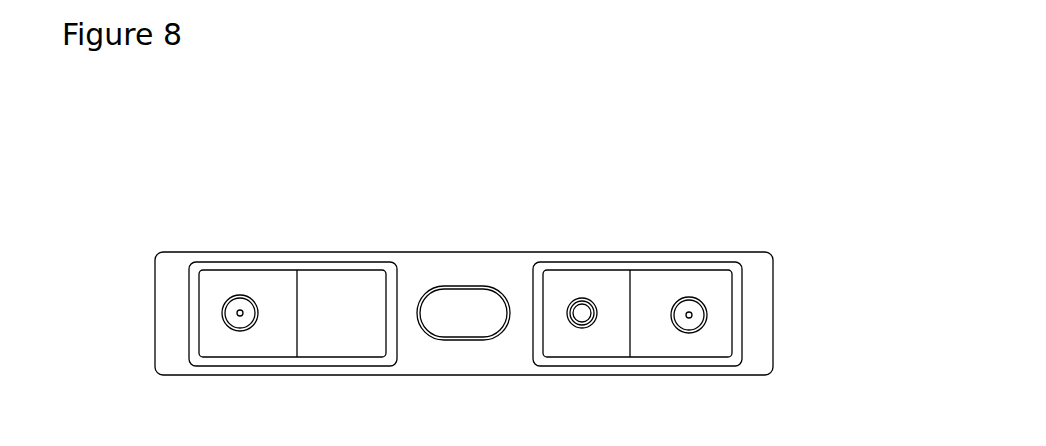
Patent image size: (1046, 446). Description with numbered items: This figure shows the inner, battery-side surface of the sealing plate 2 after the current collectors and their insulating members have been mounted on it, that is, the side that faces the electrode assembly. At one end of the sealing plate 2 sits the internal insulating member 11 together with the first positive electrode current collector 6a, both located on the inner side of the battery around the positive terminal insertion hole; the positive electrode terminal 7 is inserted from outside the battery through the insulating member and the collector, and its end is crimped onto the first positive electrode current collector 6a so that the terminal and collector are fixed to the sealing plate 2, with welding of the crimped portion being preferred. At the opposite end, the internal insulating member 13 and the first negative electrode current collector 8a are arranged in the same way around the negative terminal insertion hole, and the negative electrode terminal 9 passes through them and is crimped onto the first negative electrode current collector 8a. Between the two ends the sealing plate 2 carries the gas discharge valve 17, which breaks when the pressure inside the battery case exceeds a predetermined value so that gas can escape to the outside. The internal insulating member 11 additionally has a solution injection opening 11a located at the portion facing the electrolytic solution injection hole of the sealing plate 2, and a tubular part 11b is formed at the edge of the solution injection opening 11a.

The sealing plate 2 is at (463, 272).
The first positive electrode current collector 6a is at (709, 292).
The positive electrode terminal 7 is at (706, 315).
The first negative electrode current collector 8a is at (221, 290).
The negative electrode terminal 9 is at (231, 316).
The internal insulating member 11 is at (578, 290).
The solution injection opening 11a is at (581, 326).
The tubular part 11b is at (568, 318).
The internal insulating member 13 is at (323, 318).
The gas discharge valve 17 is at (460, 307).